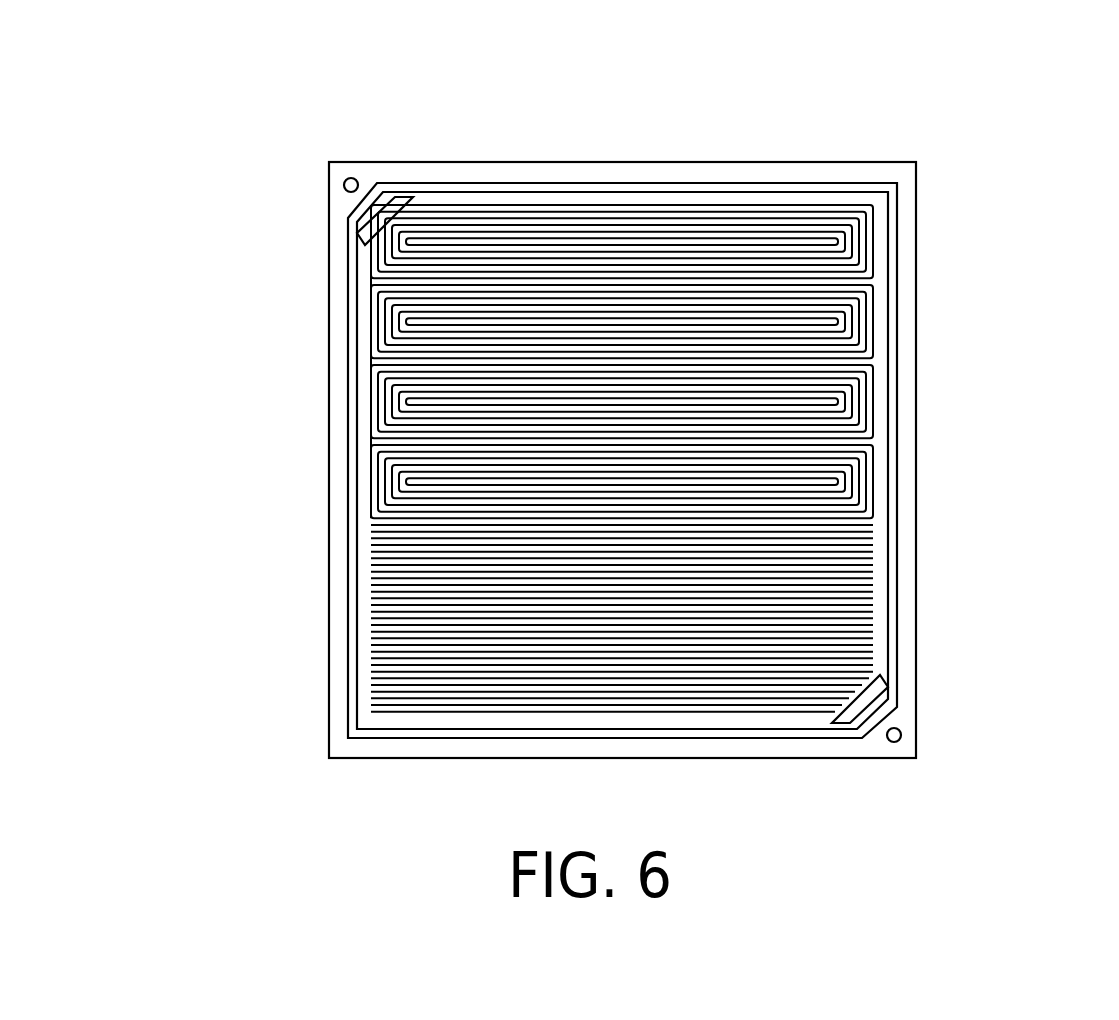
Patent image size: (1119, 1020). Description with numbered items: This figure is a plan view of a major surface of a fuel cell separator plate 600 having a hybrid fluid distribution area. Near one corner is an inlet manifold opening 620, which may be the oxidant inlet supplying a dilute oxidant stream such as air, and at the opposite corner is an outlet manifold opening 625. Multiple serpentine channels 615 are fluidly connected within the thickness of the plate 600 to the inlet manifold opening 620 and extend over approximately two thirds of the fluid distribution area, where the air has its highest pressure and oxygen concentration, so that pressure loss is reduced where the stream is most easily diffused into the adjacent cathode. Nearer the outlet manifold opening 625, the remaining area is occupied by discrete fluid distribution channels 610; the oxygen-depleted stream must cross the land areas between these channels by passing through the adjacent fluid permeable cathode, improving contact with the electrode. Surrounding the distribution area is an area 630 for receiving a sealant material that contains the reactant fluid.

The fuel cell separator plate 600 is at (356, 120).
The discrete fluid distribution channels 610 is at (835, 542).
The serpentine channels 615 is at (529, 290).
The inlet manifold opening 620 is at (403, 198).
The outlet manifold opening 625 is at (885, 677).
The sealant receiving area 630 is at (735, 186).